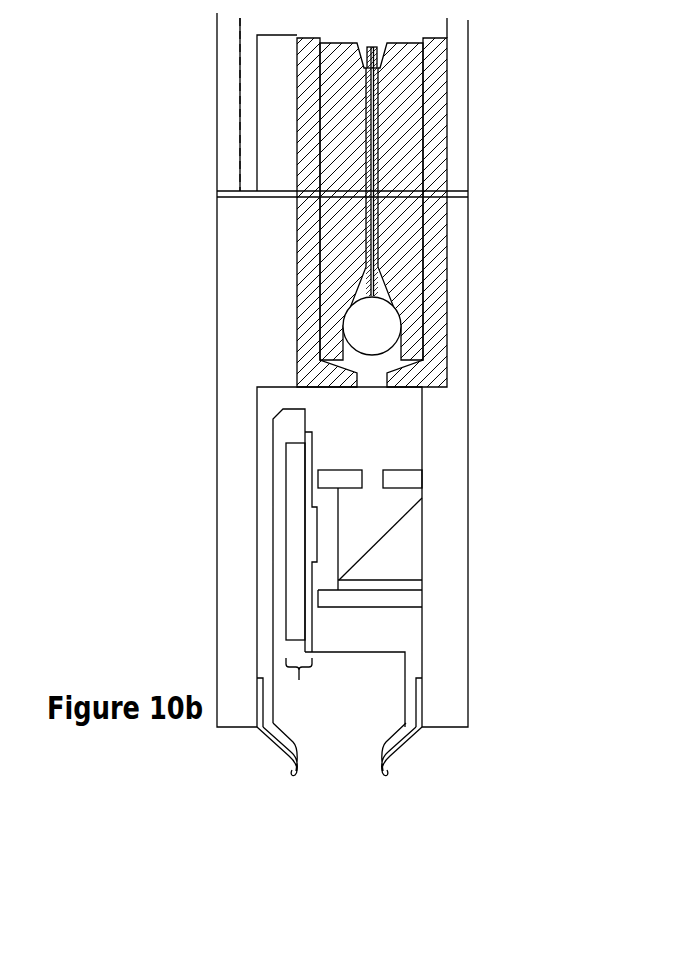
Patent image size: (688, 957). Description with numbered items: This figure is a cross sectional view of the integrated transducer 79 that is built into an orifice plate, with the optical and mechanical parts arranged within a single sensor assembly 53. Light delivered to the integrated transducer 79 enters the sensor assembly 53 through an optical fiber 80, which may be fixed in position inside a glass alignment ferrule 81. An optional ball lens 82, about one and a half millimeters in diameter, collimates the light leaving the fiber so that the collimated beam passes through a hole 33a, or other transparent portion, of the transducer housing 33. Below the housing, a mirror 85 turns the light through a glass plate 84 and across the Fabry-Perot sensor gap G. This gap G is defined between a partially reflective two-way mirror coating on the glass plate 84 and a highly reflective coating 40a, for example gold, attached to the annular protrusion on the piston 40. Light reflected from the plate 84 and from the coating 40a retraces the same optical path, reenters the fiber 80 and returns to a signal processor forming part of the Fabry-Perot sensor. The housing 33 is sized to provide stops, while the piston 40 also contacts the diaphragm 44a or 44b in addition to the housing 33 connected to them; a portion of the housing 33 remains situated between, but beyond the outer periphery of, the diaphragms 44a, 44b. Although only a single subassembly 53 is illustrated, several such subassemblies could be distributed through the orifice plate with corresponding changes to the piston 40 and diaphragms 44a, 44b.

The transducer housing 33 is at (337, 263).
The hole 33a is at (373, 478).
The piston 40 is at (362, 726).
The highly reflective coating 40a is at (286, 523).
The diaphragm 44a is at (297, 766).
The diaphragm 44b is at (382, 767).
The sensor assembly 53 is at (486, 178).
The integrated transducer 79 is at (196, 333).
The optical fiber 80 is at (372, 46).
The glass alignment ferrule 81 is at (379, 228).
The ball lens 82 is at (380, 321).
The glass plate 84 is at (382, 540).
The mirror 85 is at (328, 544).
The Fabry-Perot sensor gap G is at (299, 680).